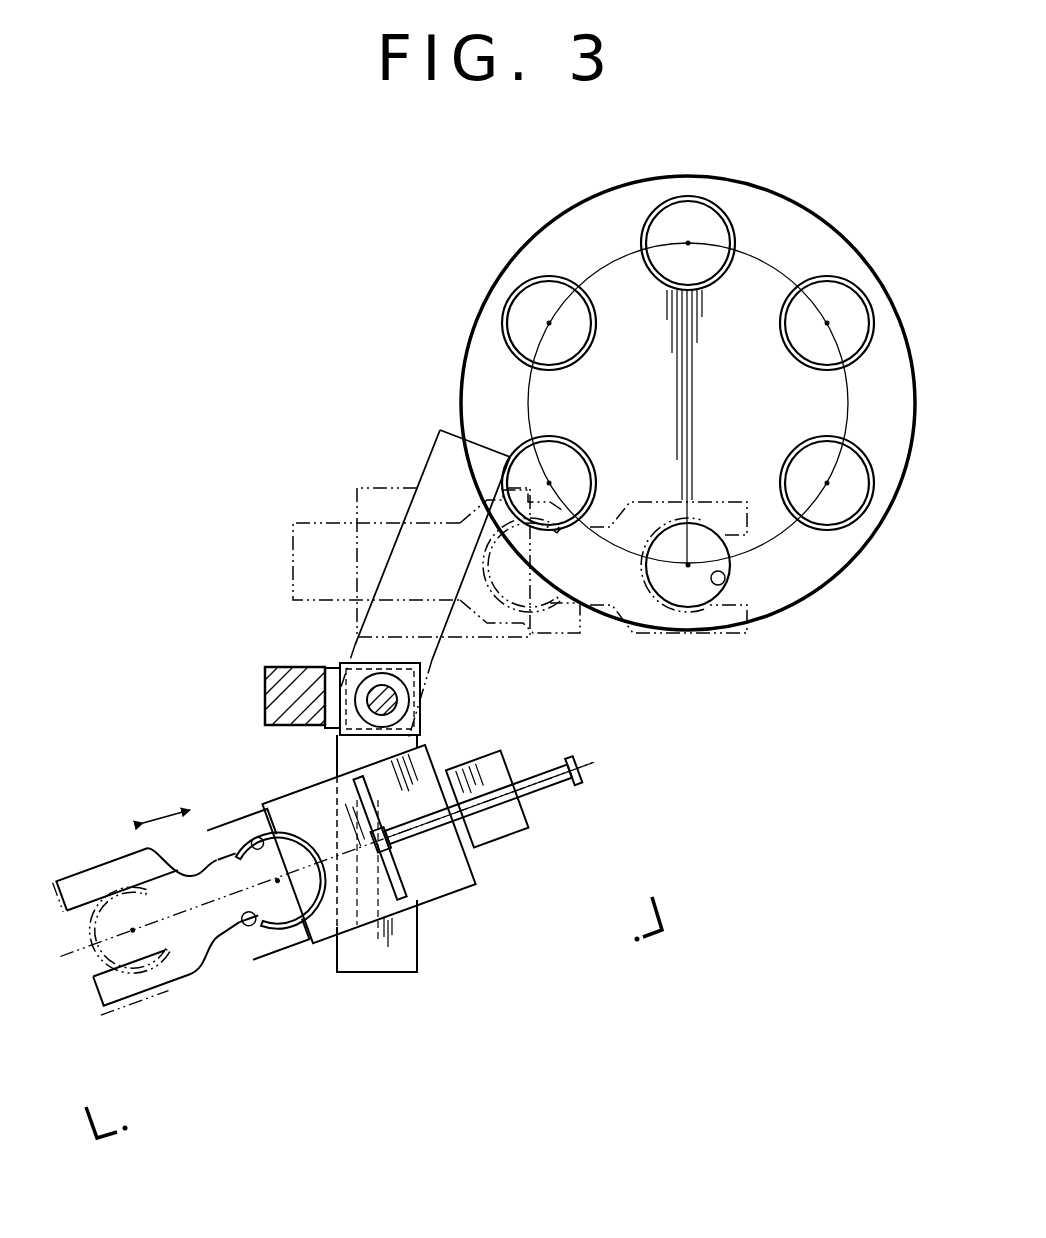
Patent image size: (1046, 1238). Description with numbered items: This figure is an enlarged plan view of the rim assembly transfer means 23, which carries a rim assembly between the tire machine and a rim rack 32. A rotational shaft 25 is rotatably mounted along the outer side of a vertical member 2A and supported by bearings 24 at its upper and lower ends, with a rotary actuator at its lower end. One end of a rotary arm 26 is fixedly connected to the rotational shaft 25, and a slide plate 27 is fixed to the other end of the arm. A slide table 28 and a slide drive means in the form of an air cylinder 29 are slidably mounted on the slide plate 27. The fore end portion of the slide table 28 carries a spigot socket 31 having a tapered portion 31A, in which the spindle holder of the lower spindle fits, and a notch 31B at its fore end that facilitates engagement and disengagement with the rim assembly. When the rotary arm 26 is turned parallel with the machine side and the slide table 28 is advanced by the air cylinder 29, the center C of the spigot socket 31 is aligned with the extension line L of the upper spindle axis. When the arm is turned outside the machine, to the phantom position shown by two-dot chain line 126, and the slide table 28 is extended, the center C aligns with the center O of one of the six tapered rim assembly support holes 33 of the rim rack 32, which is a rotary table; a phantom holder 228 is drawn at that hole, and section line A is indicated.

The vertical member 2A is at (283, 690).
The rim assembly transfer means 23 is at (530, 736).
The bearings 24 is at (333, 668).
The rotational shaft 25 is at (397, 700).
The rotary arm 26 is at (435, 660).
The two-dot chain line position of rotary arm 126 is at (450, 430).
The slide plate 27 is at (377, 488).
The slide table 28 is at (322, 523).
The holder block on wheel 228 is at (747, 640).
The air cylinder 29 is at (553, 787).
The spigot socket 31 is at (552, 600).
The tapered portion 31A is at (262, 840).
The notch 31B is at (152, 846).
The rim rack 32 is at (803, 573).
The rim assembly support hole 33 is at (672, 215).
The center of rim assembly support hole O is at (690, 240).
The center of spigot socket C is at (688, 565).
The extension line of the axis of the upper spindle L is at (128, 930).
The section line A- A is at (368, 998).